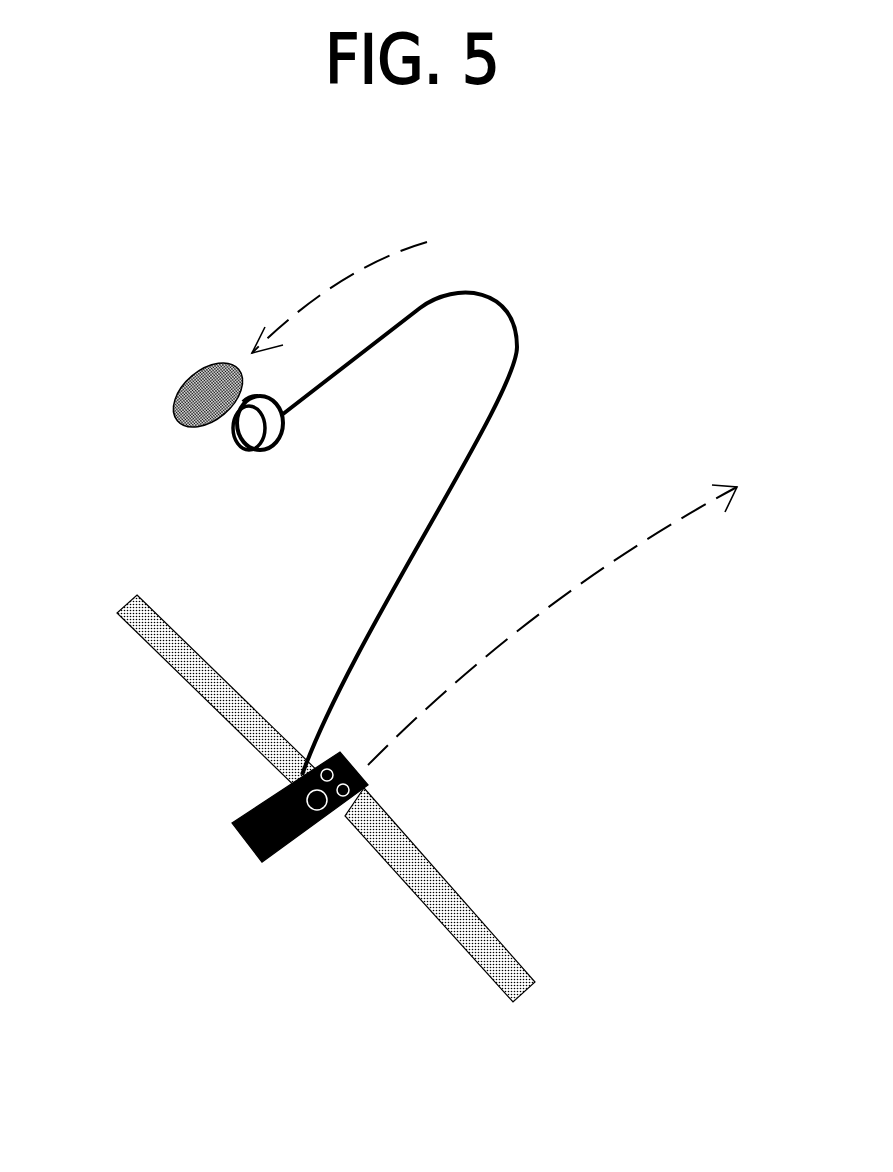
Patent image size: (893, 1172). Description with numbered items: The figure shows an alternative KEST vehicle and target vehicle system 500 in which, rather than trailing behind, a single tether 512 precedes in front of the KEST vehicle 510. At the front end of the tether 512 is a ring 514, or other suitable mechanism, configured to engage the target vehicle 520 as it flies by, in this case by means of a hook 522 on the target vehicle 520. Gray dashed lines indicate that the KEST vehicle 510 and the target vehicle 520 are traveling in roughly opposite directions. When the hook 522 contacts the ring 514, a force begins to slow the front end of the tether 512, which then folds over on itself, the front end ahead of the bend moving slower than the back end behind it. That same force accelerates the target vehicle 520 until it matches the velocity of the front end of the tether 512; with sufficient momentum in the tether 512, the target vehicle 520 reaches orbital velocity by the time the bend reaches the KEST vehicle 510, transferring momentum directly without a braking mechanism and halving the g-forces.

The KEST vehicle and target vehicle system 500 is at (128, 194).
The KEST vehicle 510 is at (368, 785).
The tether 512 is at (513, 317).
The ring 514 is at (233, 435).
The target vehicle 520 is at (203, 368).
The hook 522 is at (255, 405).